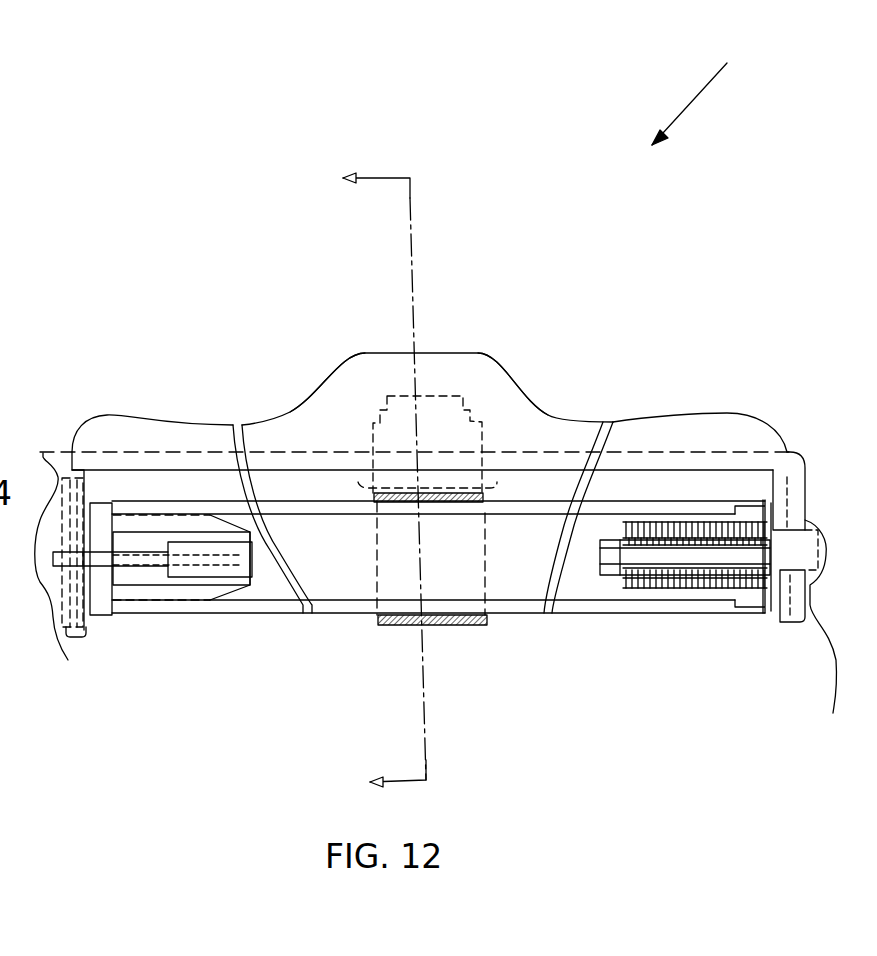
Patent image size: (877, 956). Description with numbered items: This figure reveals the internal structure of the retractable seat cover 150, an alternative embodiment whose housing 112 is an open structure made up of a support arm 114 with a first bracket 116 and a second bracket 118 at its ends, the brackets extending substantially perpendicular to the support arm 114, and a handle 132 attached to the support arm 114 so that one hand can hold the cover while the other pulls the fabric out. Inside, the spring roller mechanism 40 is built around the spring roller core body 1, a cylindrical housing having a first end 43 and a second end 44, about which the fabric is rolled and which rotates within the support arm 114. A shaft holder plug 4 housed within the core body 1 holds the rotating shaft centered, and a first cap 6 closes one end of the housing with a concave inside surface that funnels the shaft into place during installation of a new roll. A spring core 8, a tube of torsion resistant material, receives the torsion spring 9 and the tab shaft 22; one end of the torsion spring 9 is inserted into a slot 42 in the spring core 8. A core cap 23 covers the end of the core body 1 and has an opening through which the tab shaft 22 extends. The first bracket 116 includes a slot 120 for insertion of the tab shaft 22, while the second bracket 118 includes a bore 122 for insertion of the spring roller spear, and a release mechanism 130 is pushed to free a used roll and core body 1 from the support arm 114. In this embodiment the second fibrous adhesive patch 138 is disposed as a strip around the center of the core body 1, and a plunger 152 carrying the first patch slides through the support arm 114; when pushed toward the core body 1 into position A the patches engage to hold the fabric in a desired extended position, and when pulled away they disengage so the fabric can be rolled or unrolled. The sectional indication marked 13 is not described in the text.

The retractable seat cover 150 is at (710, 84).
The spring roller core body 1 is at (345, 607).
The housing 112 is at (352, 383).
The handle 132 is at (502, 383).
The support arm 114 is at (112, 447).
The position A is at (427, 392).
The section line 13- 13 is at (366, 483).
The plunger 152 is at (443, 433).
The second fibrous adhesive patch 138 is at (442, 625).
The spring roller mechanism 40 is at (162, 507).
The second end 44 is at (703, 603).
The core cap 23 is at (762, 608).
The bore 122 is at (100, 518).
The first cap 6 is at (102, 513).
The second bracket 118 is at (60, 620).
The slot 120 is at (72, 557).
The release mechanism 130 is at (87, 637).
The first end 43 is at (157, 613).
The shaft holder plug 4 is at (218, 590).
The slot 42 is at (615, 547).
The torsion spring 9 is at (652, 590).
The spring core 8 is at (615, 548).
The tab shaft 22 is at (793, 553).
The first bracket 116 is at (840, 634).